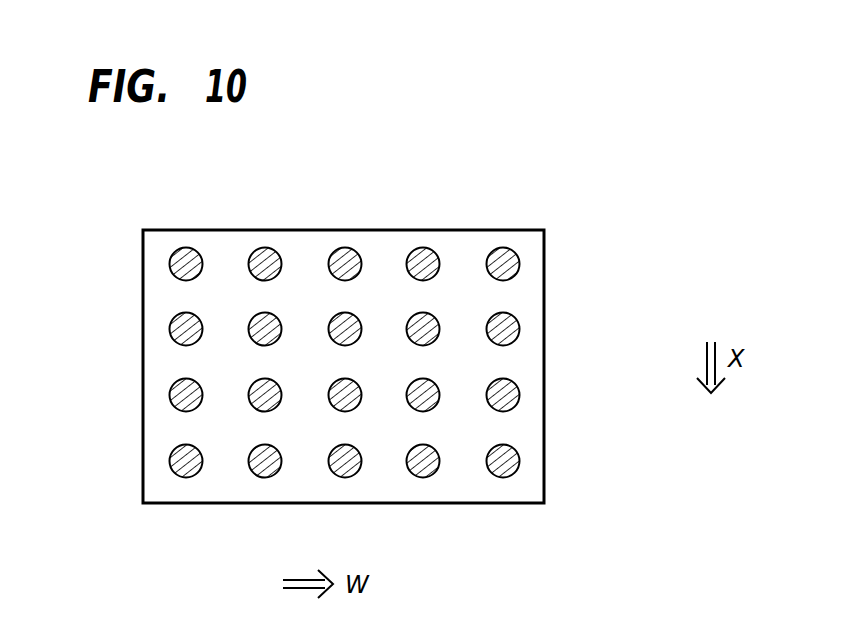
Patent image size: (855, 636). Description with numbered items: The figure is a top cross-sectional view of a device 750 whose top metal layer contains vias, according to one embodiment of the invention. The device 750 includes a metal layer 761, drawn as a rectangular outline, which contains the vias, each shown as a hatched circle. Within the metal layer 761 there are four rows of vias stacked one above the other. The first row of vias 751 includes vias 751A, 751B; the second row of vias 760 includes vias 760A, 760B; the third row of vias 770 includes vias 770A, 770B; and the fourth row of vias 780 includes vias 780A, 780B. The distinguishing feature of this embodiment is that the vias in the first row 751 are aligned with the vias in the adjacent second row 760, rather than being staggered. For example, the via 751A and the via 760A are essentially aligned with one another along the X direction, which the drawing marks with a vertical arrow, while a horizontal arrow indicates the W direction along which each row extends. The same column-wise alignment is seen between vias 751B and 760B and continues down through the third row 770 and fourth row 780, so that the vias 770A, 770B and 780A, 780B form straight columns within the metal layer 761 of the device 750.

The device 750 is at (398, 165).
The first row of vias 751 is at (554, 260).
The via 751A is at (202, 253).
The via 751B is at (279, 254).
The second row of vias 760 is at (554, 326).
The via 760A is at (202, 325).
The via 760B is at (282, 324).
The third row of vias 770 is at (554, 390).
The via 770A is at (202, 391).
The via 770B is at (281, 391).
The fourth row of vias 780 is at (554, 457).
The via 780A is at (202, 457).
The via 780B is at (281, 457).
The metal layer 761 is at (158, 479).